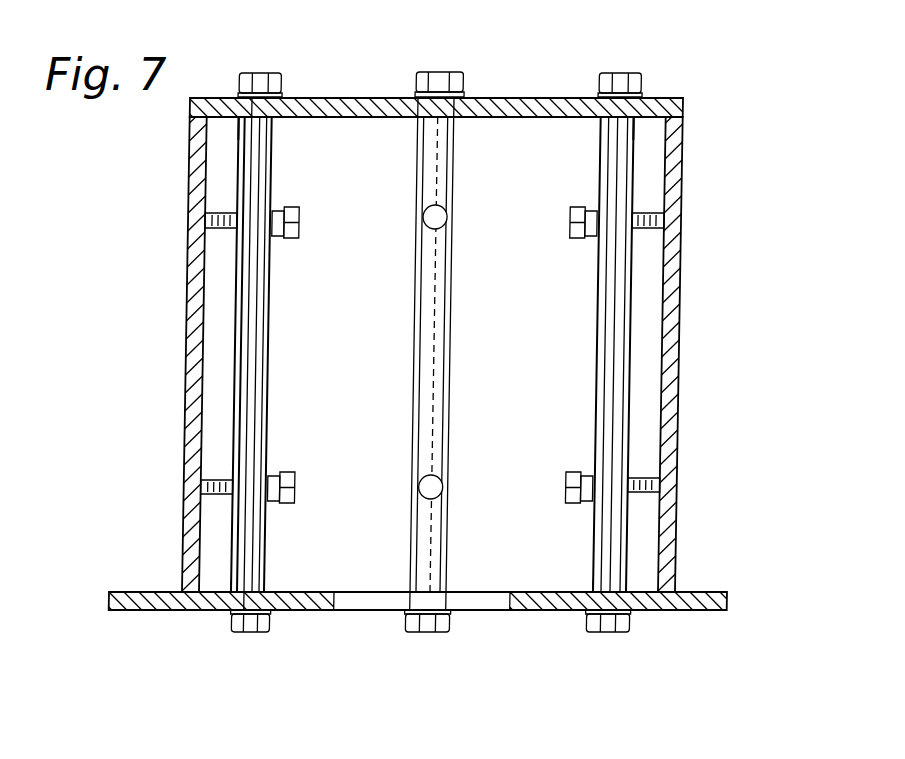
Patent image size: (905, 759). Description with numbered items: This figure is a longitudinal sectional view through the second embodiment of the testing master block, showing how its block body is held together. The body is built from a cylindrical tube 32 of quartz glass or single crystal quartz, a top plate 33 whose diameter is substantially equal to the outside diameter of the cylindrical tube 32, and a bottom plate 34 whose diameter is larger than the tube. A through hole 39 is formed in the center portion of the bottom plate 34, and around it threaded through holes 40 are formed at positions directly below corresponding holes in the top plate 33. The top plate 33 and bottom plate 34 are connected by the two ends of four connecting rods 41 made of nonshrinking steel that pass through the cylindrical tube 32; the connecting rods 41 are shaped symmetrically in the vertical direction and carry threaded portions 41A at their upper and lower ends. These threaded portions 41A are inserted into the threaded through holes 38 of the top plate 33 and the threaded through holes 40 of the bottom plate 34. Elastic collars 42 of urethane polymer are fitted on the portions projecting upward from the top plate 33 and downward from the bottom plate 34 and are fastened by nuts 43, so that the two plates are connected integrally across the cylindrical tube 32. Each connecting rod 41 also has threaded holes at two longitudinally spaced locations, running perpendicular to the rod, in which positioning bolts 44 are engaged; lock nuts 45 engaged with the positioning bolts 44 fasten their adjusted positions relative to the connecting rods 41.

The cylindrical tube 32 is at (682, 347).
The top plate 33 is at (663, 97).
The bottom plate 34 is at (718, 591).
The threaded through holes 38 is at (600, 97).
The through hole 39 is at (353, 601).
The threaded through holes 40 is at (546, 609).
The connecting rods 41 is at (276, 325).
The threaded portions 41A is at (684, 133).
The collars 42 is at (283, 97).
The nuts 43 is at (268, 73).
The positioning bolts 44 is at (300, 238).
The lock nuts 45 is at (284, 207).